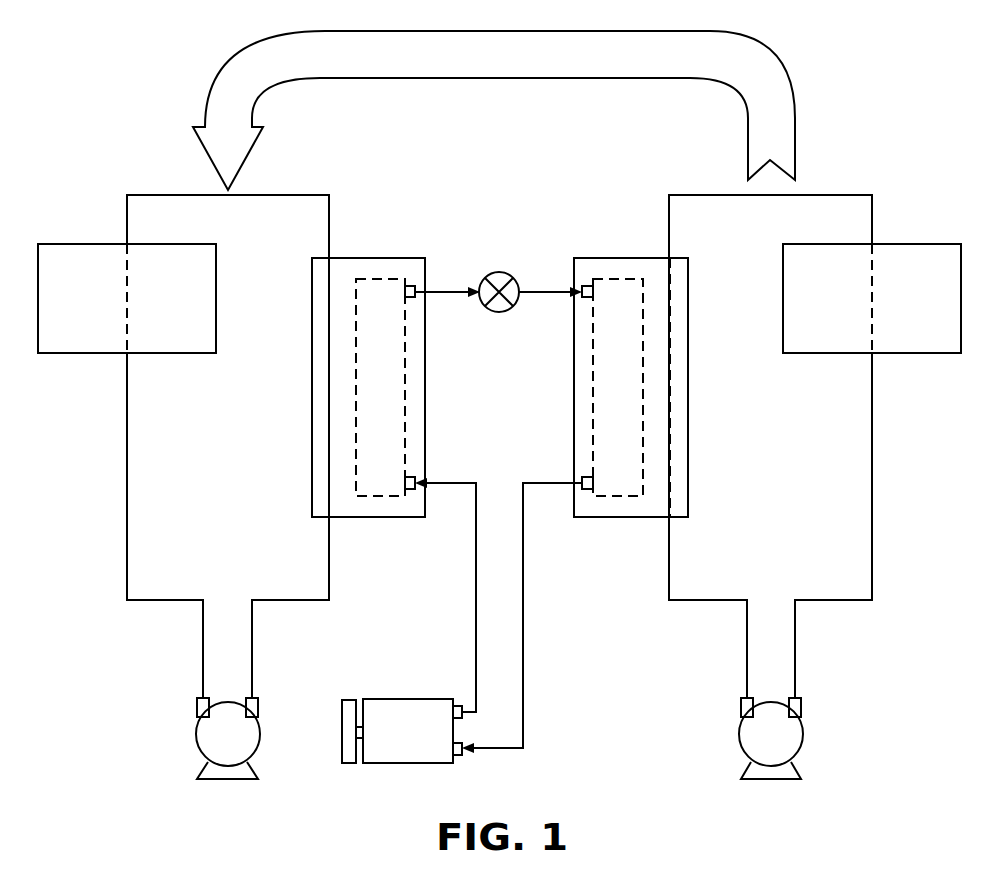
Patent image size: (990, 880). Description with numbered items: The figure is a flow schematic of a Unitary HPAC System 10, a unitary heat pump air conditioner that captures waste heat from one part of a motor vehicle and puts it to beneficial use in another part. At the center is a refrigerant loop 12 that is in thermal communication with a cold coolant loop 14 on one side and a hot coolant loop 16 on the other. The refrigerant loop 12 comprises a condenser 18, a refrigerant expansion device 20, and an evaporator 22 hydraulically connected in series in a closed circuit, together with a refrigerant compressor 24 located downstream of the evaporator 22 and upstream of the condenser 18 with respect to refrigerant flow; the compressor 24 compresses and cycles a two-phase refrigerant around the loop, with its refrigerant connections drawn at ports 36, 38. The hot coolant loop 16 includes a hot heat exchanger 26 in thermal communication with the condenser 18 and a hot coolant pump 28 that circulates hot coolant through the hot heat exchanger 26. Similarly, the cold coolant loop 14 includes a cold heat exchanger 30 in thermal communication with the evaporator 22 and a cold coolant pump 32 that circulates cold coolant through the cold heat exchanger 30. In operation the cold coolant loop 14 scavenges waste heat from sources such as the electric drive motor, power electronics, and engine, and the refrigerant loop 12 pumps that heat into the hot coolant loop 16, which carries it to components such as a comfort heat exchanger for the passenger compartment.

The Unitary HPAC System 10 is at (932, 114).
The refrigerant loop 12 is at (523, 500).
The cold coolant loop 14 is at (872, 519).
The hot coolant loop 16 is at (127, 521).
The condenser 18 is at (390, 292).
The refrigerant expansion device 20 is at (497, 281).
The evaporator 22 is at (608, 292).
The refrigerant compressor 24 is at (393, 758).
The hot heat exchanger 26 is at (348, 268).
The hot coolant pump 28 is at (246, 742).
The cold heat exchanger 30 is at (650, 268).
The cold coolant pump 32 is at (790, 742).
The pump inlet port 36 is at (465, 755).
The pump outlet conduit 38 is at (463, 703).